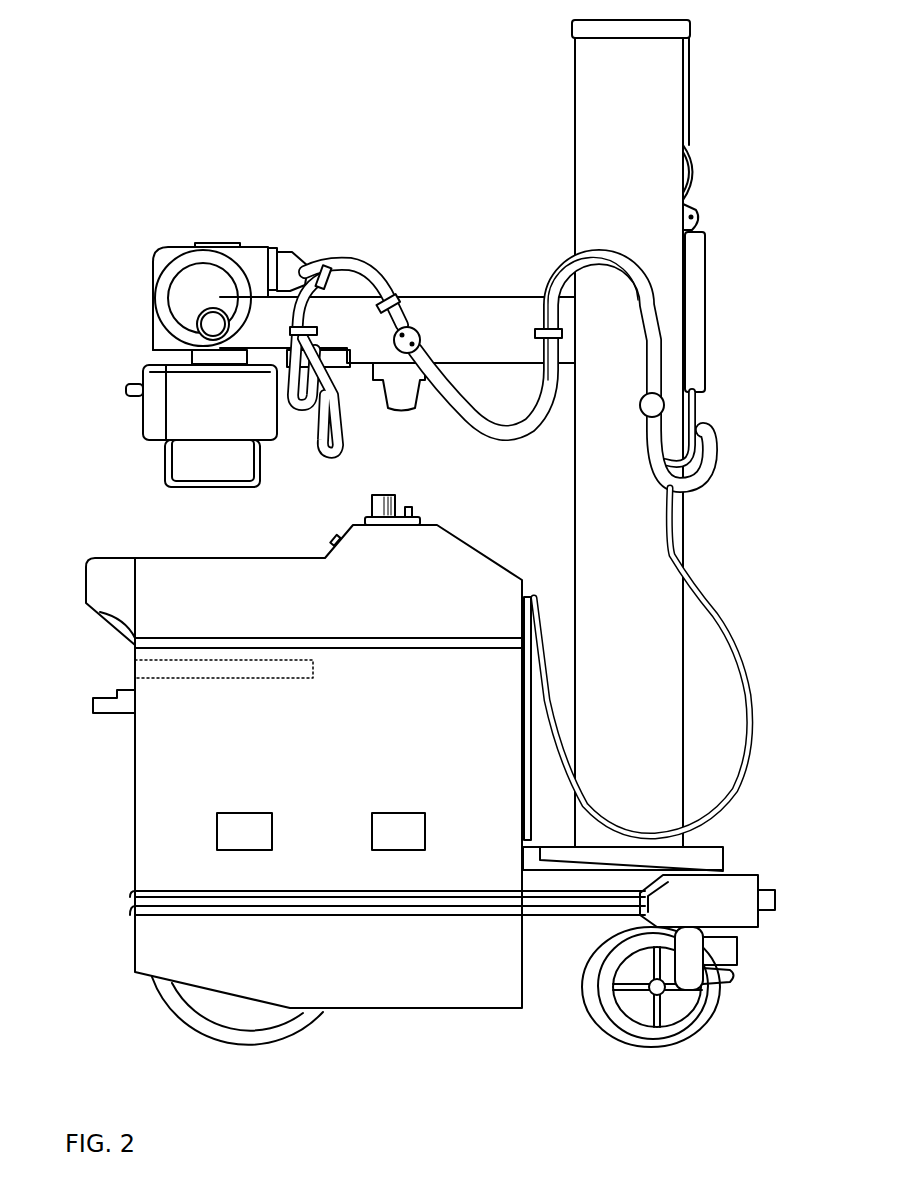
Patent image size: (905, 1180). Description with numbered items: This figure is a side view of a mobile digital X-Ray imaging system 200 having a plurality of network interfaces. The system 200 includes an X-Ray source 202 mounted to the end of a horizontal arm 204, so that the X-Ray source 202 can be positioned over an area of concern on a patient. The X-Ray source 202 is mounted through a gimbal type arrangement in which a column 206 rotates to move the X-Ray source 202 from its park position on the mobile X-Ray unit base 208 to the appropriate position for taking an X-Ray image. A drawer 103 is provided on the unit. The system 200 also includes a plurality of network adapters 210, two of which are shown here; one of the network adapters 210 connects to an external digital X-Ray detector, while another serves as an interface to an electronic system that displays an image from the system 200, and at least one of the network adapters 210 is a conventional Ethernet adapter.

The mobile digital X-Ray imaging system 200 is at (765, 1088).
The X-Ray source 202 is at (197, 297).
The horizontal arm 204 is at (488, 303).
The column 206 is at (668, 92).
The mobile X-Ray unit base 208 is at (165, 723).
The network adapters 210 is at (375, 840).
The drawer 103 is at (128, 640).